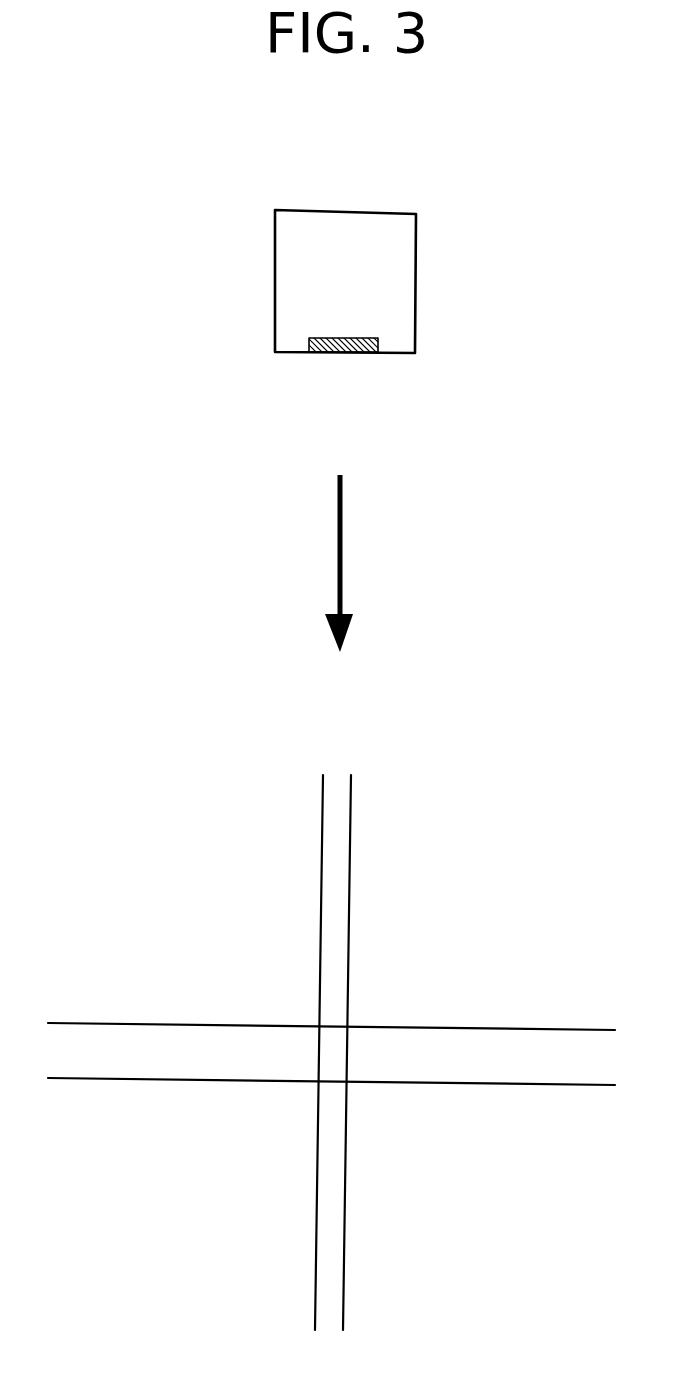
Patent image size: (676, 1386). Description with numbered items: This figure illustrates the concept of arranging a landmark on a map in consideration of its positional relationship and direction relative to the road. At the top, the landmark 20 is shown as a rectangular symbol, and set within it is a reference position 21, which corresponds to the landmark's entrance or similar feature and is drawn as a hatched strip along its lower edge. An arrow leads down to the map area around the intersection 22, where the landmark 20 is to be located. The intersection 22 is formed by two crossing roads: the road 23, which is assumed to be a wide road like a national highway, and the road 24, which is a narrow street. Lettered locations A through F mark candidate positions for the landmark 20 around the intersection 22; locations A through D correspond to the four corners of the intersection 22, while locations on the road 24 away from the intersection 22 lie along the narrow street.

The landmark 20 is at (317, 210).
The reference position 21 is at (358, 354).
The intersection 22 is at (331, 1052).
The road 23 is at (565, 1070).
The road 24 is at (332, 837).